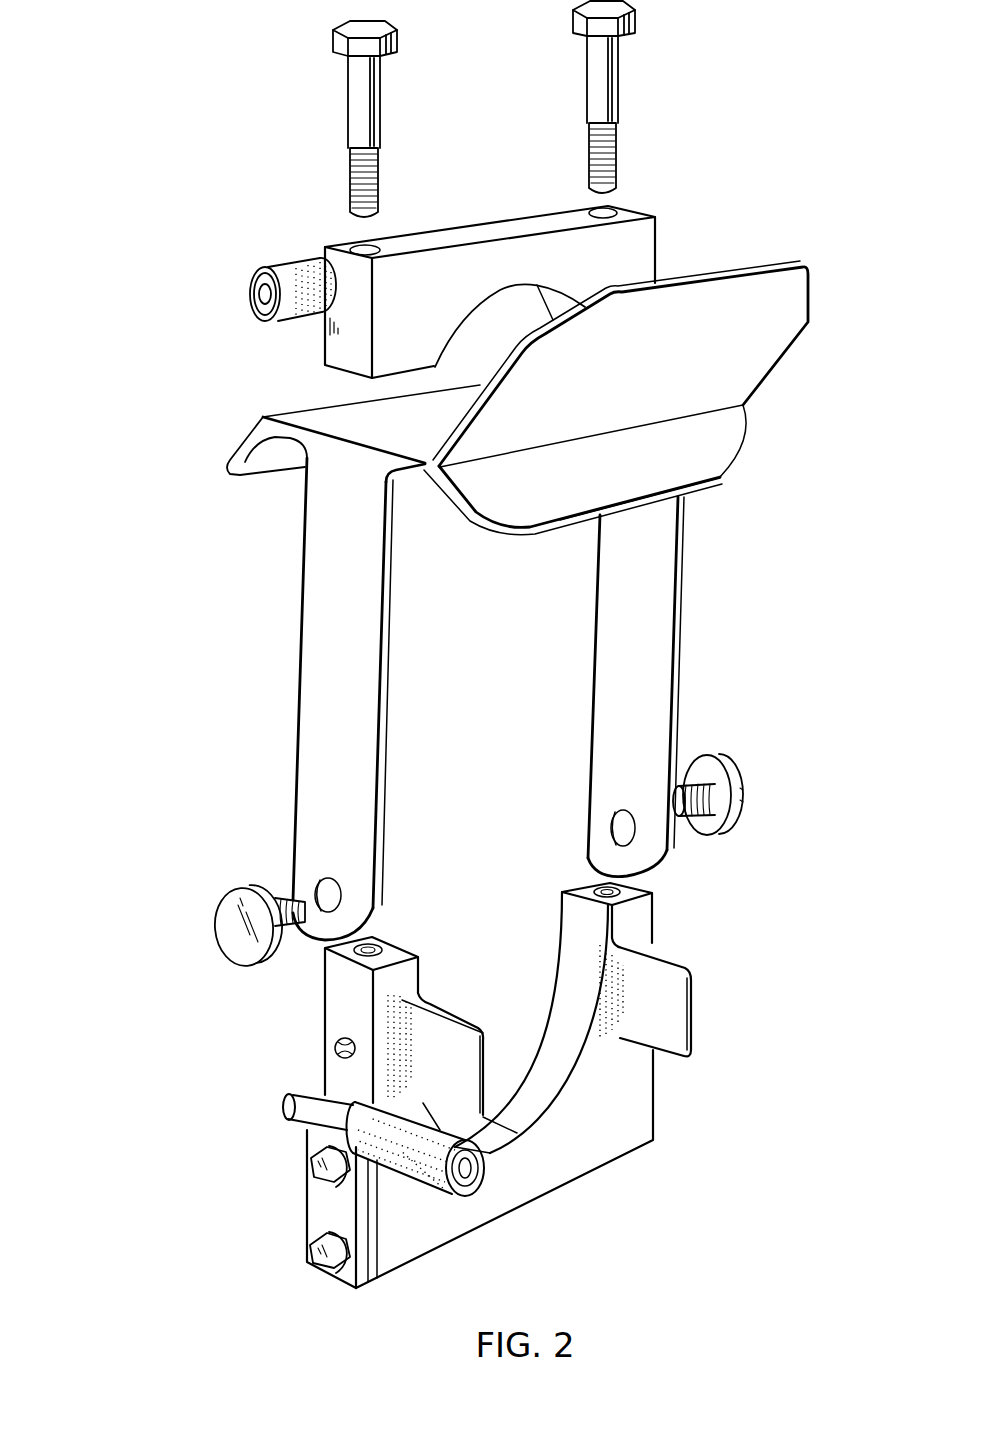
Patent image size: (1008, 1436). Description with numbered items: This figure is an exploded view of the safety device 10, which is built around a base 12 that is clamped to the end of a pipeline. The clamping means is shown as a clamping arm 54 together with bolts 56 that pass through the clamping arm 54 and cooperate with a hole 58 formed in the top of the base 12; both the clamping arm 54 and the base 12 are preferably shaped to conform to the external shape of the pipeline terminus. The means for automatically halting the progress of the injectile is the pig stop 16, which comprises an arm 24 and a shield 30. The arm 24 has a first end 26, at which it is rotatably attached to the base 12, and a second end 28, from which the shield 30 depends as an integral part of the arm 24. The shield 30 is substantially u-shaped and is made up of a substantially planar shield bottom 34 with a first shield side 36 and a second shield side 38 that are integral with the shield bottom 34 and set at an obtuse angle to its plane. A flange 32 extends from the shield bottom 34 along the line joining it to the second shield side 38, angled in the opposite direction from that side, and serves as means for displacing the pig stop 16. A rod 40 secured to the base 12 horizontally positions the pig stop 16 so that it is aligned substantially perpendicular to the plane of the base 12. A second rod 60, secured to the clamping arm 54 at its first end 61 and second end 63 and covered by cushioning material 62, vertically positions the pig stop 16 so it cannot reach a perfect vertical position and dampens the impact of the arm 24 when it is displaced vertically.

The safety device 10 is at (205, 222).
The base 12 is at (552, 1175).
The pig stop 16 is at (133, 647).
The arm 24 is at (634, 640).
The first end 26 is at (588, 860).
The second end 28 is at (351, 464).
The shield 30 is at (326, 448).
The flange 32 is at (733, 322).
The shield bottom 34 is at (393, 410).
The first shield side 36 is at (252, 467).
The second shield side 38 is at (643, 462).
The rod 40 is at (288, 1106).
The clamping arm 54 is at (515, 243).
The bolt 56 is at (378, 108).
The hole 58 is at (600, 890).
The rod 60 is at (262, 297).
The first end 61 is at (322, 260).
The cushioning material 62 is at (297, 258).
The second end 63 is at (256, 283).